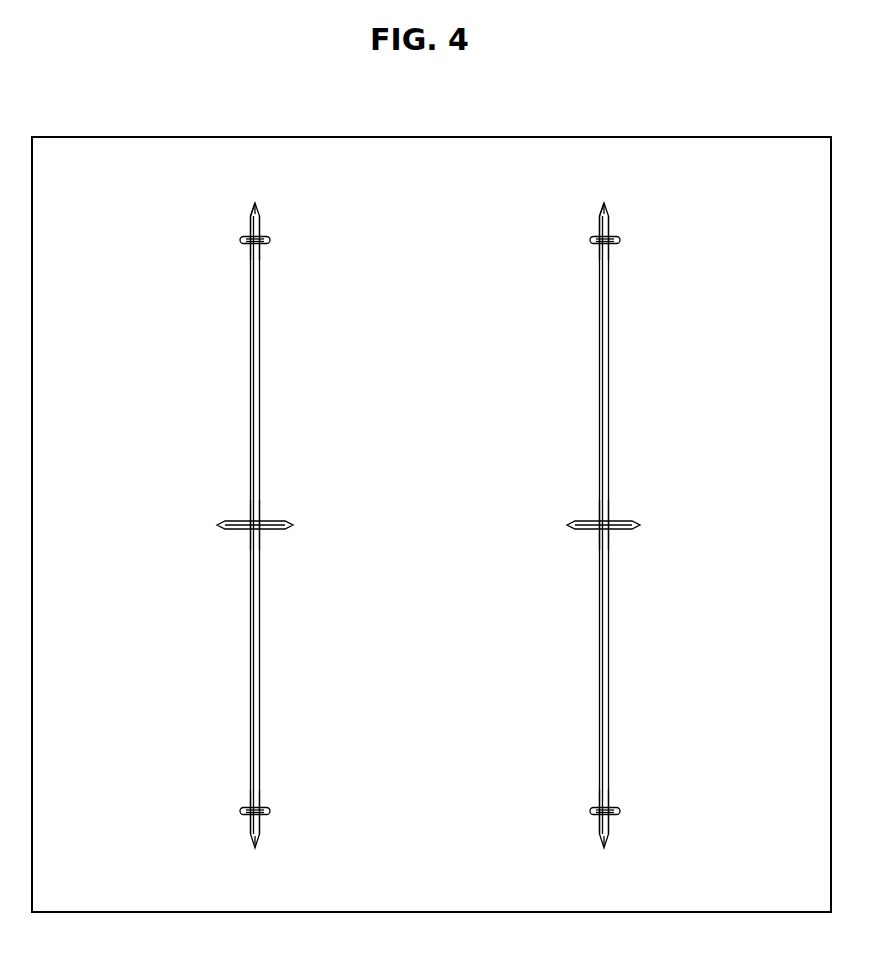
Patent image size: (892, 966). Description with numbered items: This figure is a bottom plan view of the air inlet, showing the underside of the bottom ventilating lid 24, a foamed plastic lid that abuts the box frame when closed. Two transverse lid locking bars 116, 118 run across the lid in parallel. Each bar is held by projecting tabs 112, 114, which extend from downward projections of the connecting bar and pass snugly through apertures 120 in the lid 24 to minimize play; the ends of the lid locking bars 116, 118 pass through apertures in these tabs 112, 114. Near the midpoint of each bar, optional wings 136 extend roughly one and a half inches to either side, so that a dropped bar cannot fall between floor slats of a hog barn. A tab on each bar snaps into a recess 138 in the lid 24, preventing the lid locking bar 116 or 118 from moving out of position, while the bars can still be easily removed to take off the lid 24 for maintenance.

The bottom ventilating lid 24 is at (481, 476).
The projecting tab 112 is at (267, 245).
The projecting tab 114 is at (611, 245).
The lid locking bar 116 is at (262, 374).
The lid locking bar 118 is at (599, 414).
The aperture 120 is at (240, 236).
The wing 136 is at (274, 530).
The recess 138 is at (261, 518).